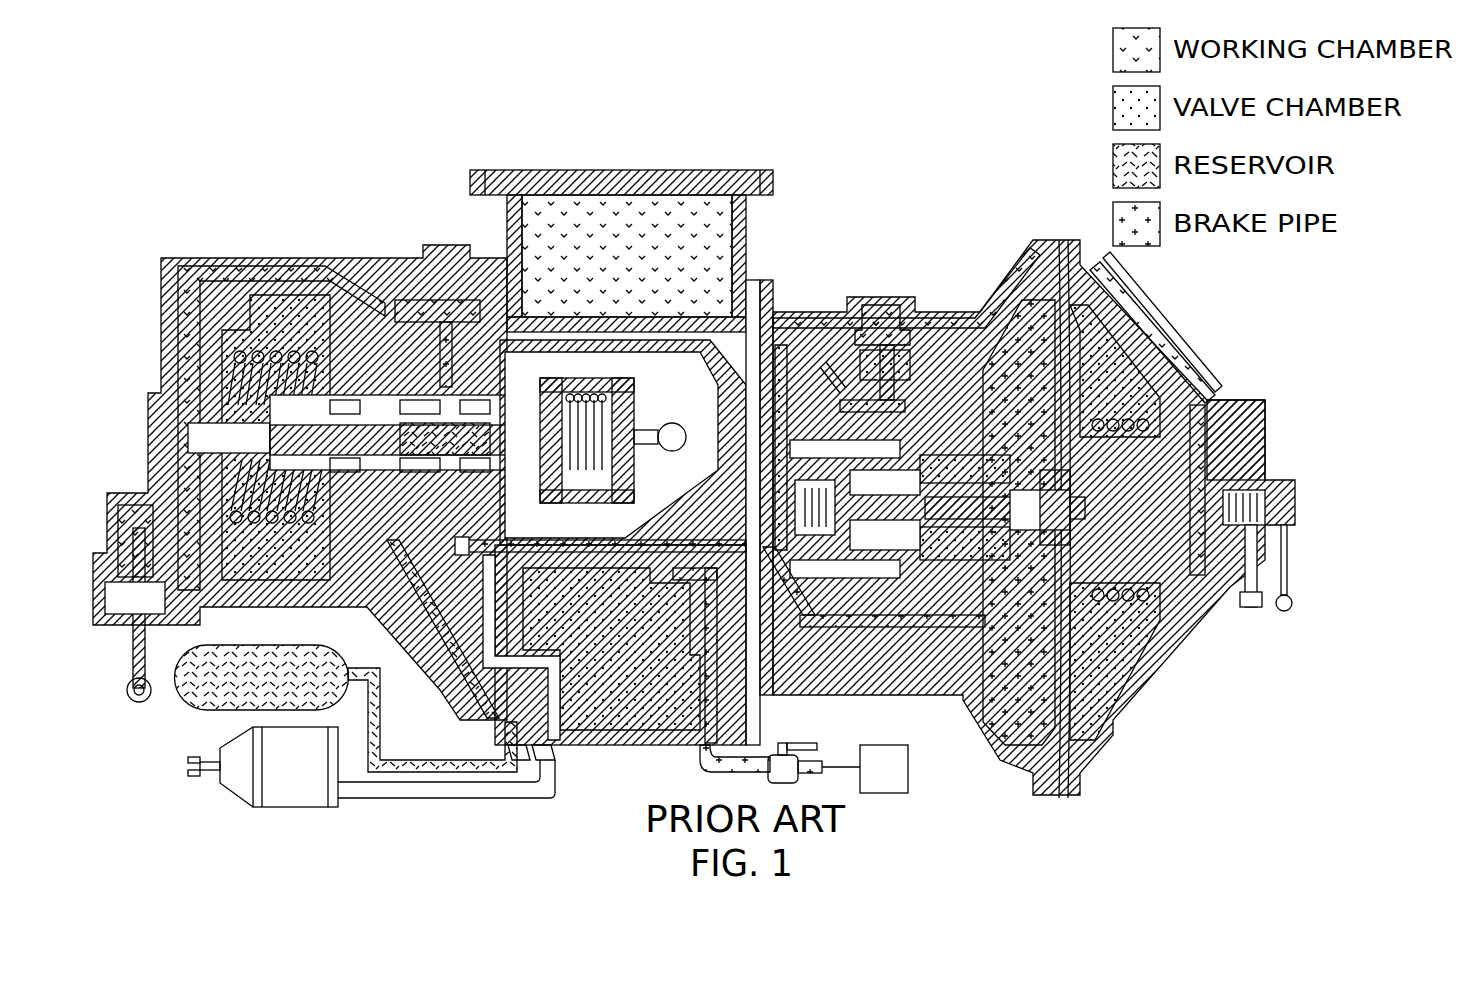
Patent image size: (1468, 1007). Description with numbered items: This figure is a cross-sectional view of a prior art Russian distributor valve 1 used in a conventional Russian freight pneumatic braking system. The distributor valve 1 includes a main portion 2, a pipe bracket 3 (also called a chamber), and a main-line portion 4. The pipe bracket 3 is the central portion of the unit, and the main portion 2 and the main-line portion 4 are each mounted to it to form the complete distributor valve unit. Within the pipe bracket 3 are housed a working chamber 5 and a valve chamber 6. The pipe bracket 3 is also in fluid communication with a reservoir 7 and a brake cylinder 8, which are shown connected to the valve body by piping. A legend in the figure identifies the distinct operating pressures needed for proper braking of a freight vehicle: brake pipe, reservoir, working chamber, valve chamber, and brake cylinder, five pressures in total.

The distributor valve 1 is at (686, 480).
The main portion 2 is at (220, 258).
The pipe bracket 3 is at (620, 170).
The main-line portion 4 is at (1232, 400).
The working chamber 5 is at (710, 250).
The valve chamber 6 is at (630, 718).
The reservoir 7 is at (180, 705).
The brake cylinder 8 is at (285, 797).